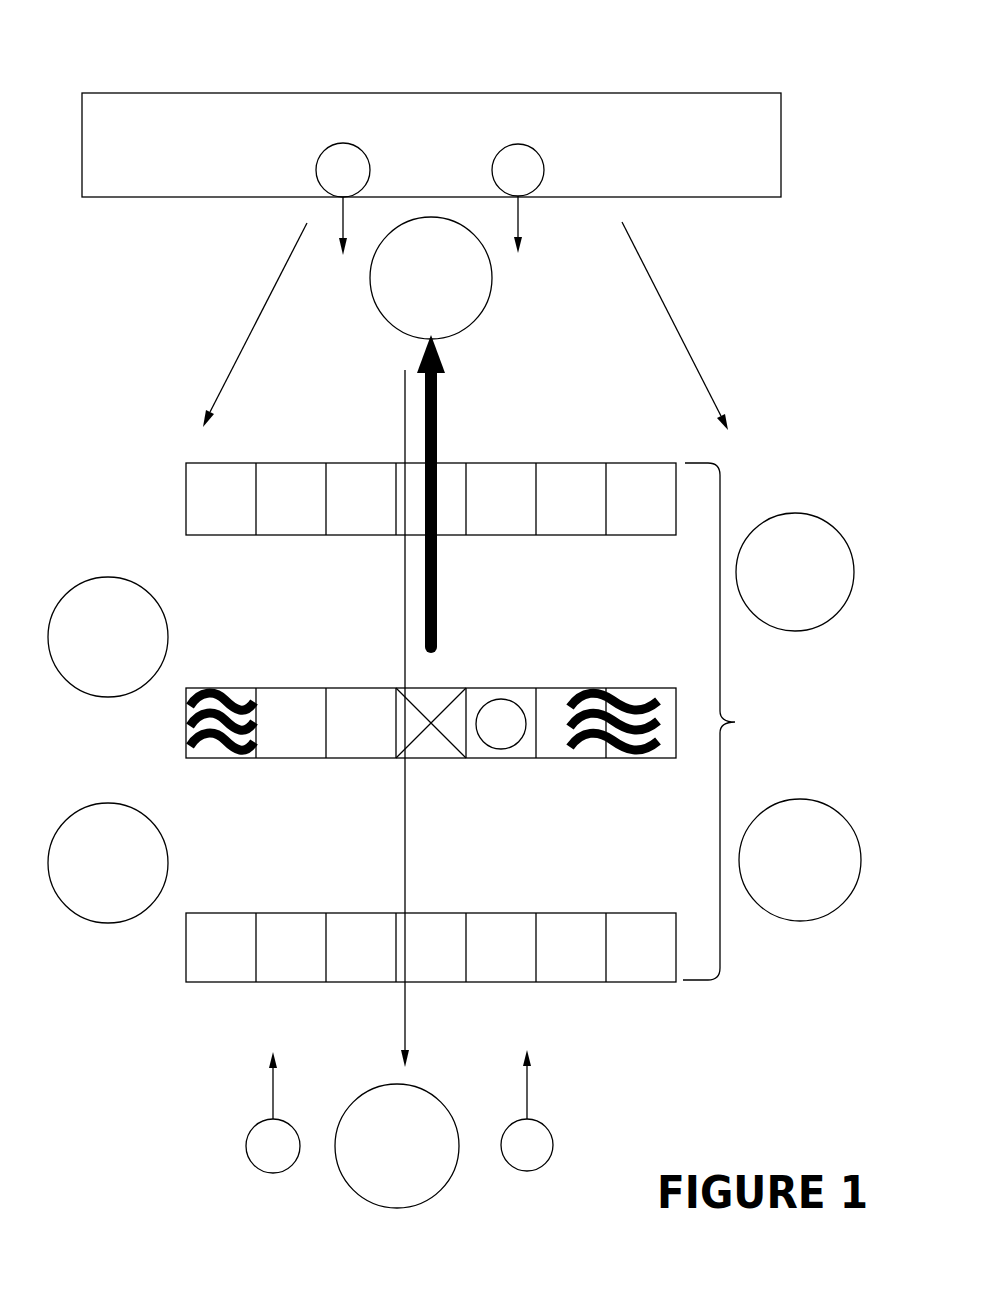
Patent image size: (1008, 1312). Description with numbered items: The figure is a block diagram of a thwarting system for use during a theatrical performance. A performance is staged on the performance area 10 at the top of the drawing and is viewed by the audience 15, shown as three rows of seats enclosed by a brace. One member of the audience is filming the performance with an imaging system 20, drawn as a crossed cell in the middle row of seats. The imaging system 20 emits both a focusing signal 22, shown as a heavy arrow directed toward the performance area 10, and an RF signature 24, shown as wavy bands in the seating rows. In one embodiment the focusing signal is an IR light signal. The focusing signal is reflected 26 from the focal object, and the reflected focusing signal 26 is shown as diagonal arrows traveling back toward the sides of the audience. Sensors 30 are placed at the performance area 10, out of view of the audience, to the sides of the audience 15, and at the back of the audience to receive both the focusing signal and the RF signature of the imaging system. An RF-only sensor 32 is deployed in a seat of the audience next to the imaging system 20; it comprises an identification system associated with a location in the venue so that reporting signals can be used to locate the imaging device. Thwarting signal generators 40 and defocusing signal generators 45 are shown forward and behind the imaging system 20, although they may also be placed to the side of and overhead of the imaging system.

The performance area 10 is at (431, 145).
The audience 15 is at (545, 722).
The imaging system 20 is at (520, 675).
The focusing signal 22 is at (542, 467).
The RF signature 24 is at (424, 768).
The reflected focusing signal 26 is at (541, 326).
The sensor 30 is at (454, 712).
The RF-only sensor 32 is at (583, 766).
The thwarting signal generator 40 is at (645, 589).
The defocusing signal generator 45 is at (208, 590).